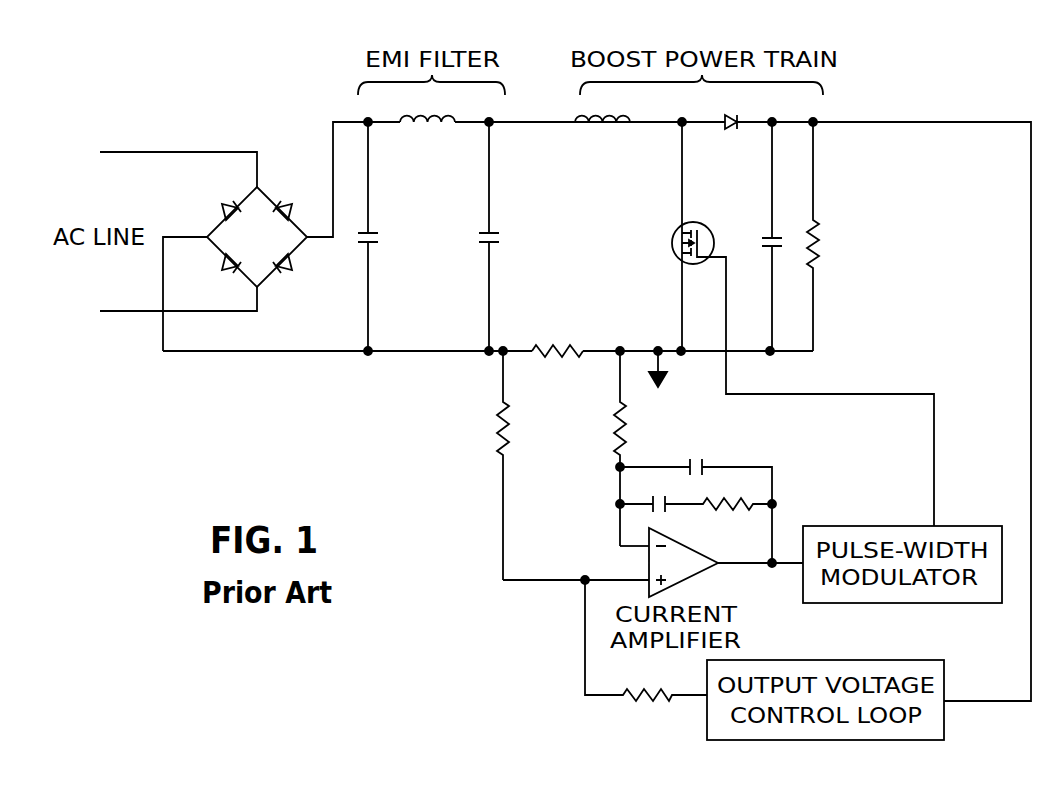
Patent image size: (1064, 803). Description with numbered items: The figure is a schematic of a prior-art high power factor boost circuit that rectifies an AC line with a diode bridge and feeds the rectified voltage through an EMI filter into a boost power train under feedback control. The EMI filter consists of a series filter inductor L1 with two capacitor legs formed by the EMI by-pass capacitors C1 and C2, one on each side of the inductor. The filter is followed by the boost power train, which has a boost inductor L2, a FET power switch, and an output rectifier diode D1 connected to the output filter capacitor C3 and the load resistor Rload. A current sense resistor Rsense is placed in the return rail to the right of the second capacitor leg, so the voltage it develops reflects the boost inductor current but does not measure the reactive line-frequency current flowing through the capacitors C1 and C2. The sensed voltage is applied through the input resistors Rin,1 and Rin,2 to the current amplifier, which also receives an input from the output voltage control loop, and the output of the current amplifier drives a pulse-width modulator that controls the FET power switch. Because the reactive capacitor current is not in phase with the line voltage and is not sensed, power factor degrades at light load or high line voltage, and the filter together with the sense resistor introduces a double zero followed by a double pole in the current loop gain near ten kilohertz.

The series filter inductor L1 is at (427, 105).
The boost inductor L2 is at (602, 105).
The output rectifier diode D1 is at (727, 109).
The EMI by-pass capacitor C1 is at (387, 236).
The EMI by-pass capacitor C2 is at (507, 236).
The output filter capacitor C3 is at (756, 236).
The load resistor Rload is at (843, 236).
The current sense resistor Rsense is at (554, 331).
The current amplifier input resistor Rin,1 is at (649, 448).
The current amplifier input resistor Rin,2 is at (470, 465).